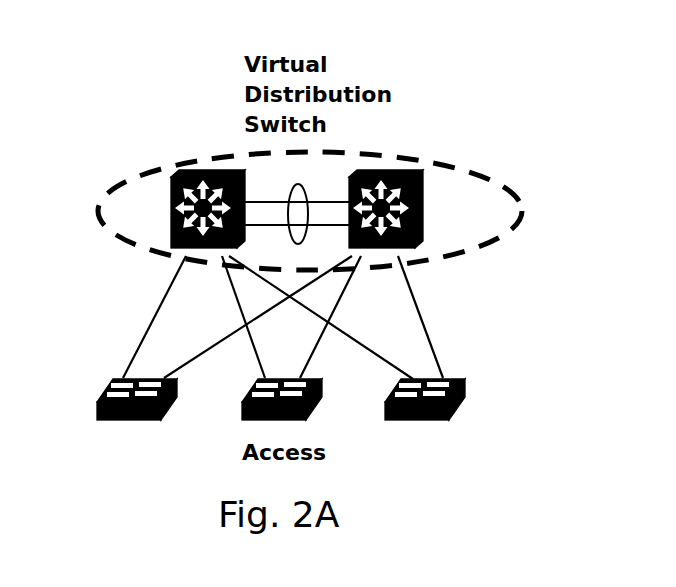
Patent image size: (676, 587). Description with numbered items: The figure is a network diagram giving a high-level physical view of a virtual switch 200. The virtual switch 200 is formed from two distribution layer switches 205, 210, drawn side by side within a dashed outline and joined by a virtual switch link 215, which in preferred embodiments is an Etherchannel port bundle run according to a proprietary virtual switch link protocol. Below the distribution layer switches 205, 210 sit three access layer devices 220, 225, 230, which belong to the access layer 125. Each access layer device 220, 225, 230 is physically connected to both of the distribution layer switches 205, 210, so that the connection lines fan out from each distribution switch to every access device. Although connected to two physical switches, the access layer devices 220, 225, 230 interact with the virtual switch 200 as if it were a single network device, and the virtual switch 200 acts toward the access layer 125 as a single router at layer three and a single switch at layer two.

The access layer 125 is at (478, 366).
The virtual switch 200 is at (379, 149).
The distribution layer switch 205 is at (420, 178).
The distribution layer switch 210 is at (178, 168).
The virtual switch link 215 is at (325, 188).
The access layer device 220 is at (140, 420).
The access layer device 225 is at (312, 407).
The access layer device 230 is at (460, 406).